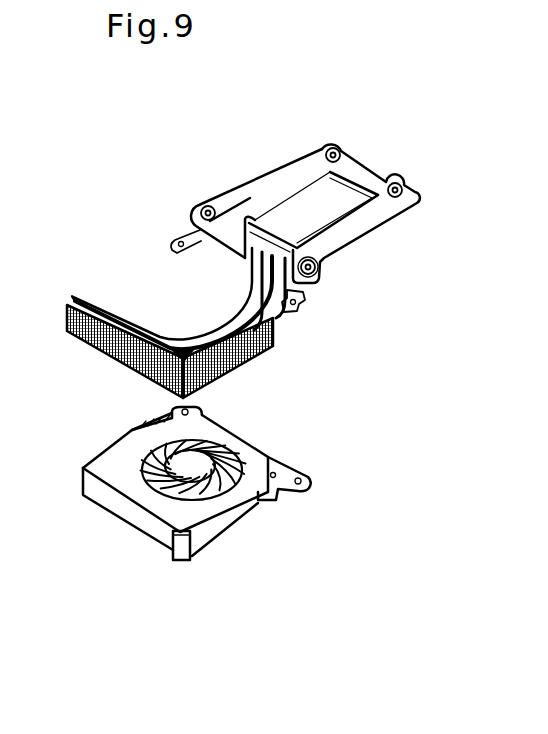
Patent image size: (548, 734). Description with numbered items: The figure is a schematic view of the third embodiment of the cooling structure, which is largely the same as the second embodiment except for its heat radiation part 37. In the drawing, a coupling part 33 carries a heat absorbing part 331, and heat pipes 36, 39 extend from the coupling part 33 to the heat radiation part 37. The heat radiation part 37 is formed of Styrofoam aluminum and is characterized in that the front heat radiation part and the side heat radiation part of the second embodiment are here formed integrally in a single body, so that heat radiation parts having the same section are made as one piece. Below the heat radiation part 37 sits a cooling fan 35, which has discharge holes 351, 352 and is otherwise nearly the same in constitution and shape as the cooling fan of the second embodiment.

The coupling part 33 is at (257, 200).
The heat absorbing part 331 is at (307, 207).
The heat pipe 36 is at (85, 296).
The heat radiation part 37 is at (259, 362).
The heat pipe 39 is at (308, 289).
The cooling fan 35 is at (153, 443).
The discharge hole 351 is at (127, 510).
The discharge hole 352 is at (203, 535).